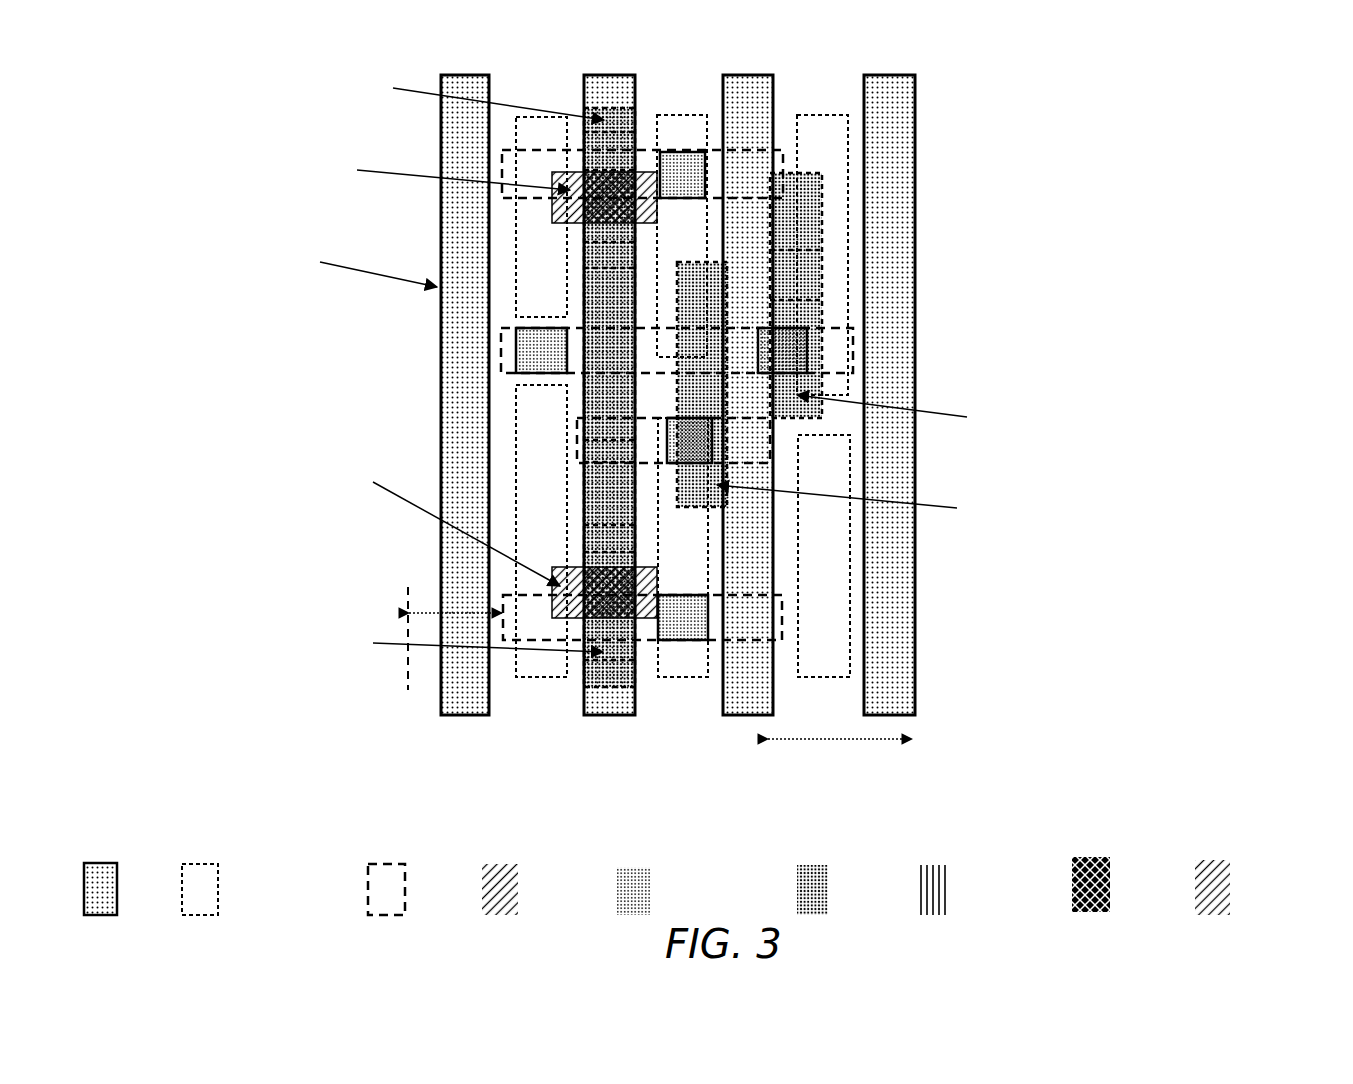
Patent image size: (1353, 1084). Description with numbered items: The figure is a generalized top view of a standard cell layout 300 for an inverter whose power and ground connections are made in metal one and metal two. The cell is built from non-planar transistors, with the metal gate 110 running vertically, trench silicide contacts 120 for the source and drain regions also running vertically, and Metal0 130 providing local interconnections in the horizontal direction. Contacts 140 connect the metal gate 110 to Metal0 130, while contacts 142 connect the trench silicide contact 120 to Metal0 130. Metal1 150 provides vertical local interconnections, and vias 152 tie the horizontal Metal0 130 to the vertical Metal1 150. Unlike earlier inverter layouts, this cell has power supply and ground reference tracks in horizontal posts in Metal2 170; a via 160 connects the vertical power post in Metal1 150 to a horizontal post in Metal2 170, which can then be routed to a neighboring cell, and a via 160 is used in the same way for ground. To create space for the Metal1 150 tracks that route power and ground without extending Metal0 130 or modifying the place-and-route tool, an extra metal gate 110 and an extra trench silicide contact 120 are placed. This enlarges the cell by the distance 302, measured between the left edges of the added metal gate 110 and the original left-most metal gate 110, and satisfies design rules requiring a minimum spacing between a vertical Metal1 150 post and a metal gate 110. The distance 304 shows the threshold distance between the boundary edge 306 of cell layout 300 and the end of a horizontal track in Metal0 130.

The metal gate 110 is at (102, 860).
The trench silicide contact 120 is at (200, 860).
The metal 0 130 is at (385, 860).
The contact 140 is at (500, 860).
The contact 142 is at (633, 868).
The metal 1 150 is at (812, 865).
The via 152 is at (935, 865).
The via 160 is at (1093, 857).
The metal 2 170 is at (1215, 865).
The cell layout 300 is at (1213, 142).
The distance 302 is at (882, 738).
The distance 304 is at (497, 610).
The boundary edge 306 is at (407, 623).